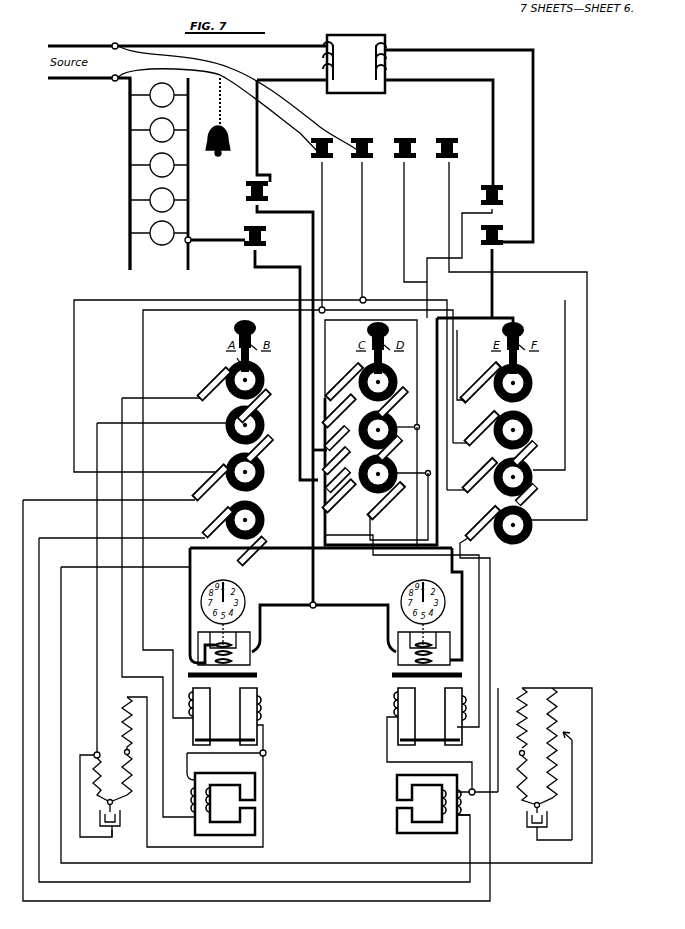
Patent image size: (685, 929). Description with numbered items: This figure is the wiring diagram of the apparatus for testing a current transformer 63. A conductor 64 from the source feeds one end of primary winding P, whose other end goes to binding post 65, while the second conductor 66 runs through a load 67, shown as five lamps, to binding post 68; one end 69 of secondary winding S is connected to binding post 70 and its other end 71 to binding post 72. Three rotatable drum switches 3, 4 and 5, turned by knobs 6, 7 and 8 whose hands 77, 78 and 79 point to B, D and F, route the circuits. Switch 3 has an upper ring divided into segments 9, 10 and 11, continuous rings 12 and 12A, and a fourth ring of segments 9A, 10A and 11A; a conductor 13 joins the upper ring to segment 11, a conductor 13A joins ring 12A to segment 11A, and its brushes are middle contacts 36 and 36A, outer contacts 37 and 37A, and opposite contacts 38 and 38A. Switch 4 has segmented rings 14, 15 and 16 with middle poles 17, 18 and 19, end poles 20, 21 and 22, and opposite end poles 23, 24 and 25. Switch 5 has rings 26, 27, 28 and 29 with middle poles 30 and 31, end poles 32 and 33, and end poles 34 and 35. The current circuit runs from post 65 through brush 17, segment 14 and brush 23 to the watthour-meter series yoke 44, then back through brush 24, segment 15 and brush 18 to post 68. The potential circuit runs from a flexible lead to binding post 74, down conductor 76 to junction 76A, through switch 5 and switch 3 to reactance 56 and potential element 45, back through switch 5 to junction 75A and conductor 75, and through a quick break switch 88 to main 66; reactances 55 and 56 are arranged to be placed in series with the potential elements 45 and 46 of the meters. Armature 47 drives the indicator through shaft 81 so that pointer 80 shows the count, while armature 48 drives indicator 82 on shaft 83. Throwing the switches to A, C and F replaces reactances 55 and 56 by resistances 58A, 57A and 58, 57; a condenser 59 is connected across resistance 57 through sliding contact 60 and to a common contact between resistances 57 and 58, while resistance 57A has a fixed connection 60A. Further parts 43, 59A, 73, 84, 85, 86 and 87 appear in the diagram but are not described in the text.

The drum switch 3 is at (198, 438).
The drum switch 4 is at (311, 441).
The drum switch 5 is at (548, 438).
The knob 6 is at (245, 341).
The knob 7 is at (378, 342).
The knob 8 is at (513, 342).
The segment 9 is at (235, 357).
The segment 9A is at (262, 493).
The segment 10 is at (262, 374).
The segment 10A is at (262, 515).
The segment 11 is at (226, 390).
The segment 11A is at (228, 531).
The continuous ring 12 is at (262, 420).
The continuous ring 12A is at (262, 467).
The conductor 13 is at (228, 402).
The conductor 13A is at (226, 492).
The ring 14 is at (378, 382).
The ring 15 is at (391, 430).
The ring 16 is at (397, 474).
The middle pole 17 is at (339, 410).
The middle pole 18 is at (331, 443).
The middle pole 19 is at (401, 603).
The end pole 20 is at (393, 402).
The end pole 21 is at (393, 448).
The end pole 22 is at (398, 487).
The end pole 23 is at (344, 381).
The end pole 24 is at (337, 461).
The end pole 25 is at (339, 480).
The ring 26 is at (513, 383).
The ring 27 is at (513, 430).
The ring 28 is at (513, 477).
The ring 29 is at (513, 525).
The middle pole 30 is at (479, 366).
The middle pole 31 is at (261, 700).
The end pole 32 is at (476, 425).
The end pole 33 is at (472, 473).
The end pole 34 is at (539, 385).
The end pole 35 is at (531, 495).
The middle contact 36 is at (264, 449).
The middle contact 36A is at (126, 482).
The outer contact 37 is at (264, 400).
The outer contact 37A is at (252, 558).
The contact 38 is at (176, 383).
The contact 38A is at (136, 522).
The armature 43 is at (396, 652).
The watthour-meter series yoke 44 is at (252, 652).
The potential element 45 is at (395, 717).
The potential element 46 is at (252, 718).
The armature 47 is at (257, 675).
The armature 48 is at (392, 675).
The reactance 55 is at (250, 797).
The reactance 56 is at (397, 787).
The fixed resistance 57 is at (548, 745).
The resistance 57A is at (102, 781).
The fixed resistance 58 is at (517, 718).
The resistance 58A is at (122, 718).
The condenser 59 is at (528, 833).
The condenser 59A is at (118, 830).
The sliding contact 60 is at (572, 776).
The fixed connection 60A is at (90, 752).
The current transformer 63 is at (354, 56).
The conductor 64 is at (113, 39).
The binding post 65 is at (242, 192).
The conductor 66 is at (113, 86).
The load 67 is at (159, 174).
The binding post 68 is at (241, 236).
The end of secondary winding 69 is at (459, 137).
The binding post 70 is at (476, 275).
The end of secondary winding 71 is at (439, 125).
The binding post 72 is at (471, 251).
The lamp 73 is at (322, 144).
The binding post 74 is at (362, 144).
The conductor 75 is at (330, 235).
The junction point 75A is at (331, 301).
The conductor 76 is at (370, 230).
The junction point 76A is at (372, 294).
The hand 77 is at (262, 354).
The hand 78 is at (395, 354).
The hand 79 is at (530, 354).
The pointer 80 is at (245, 595).
The shaft 81 is at (227, 630).
The indicator 82 is at (402, 595).
The shaft 83 is at (419, 630).
The conductor 84 is at (415, 222).
The conductor 85 is at (517, 341).
The lamp 86 is at (405, 144).
The lamp 87 is at (447, 144).
The quick break switch 88 is at (225, 117).